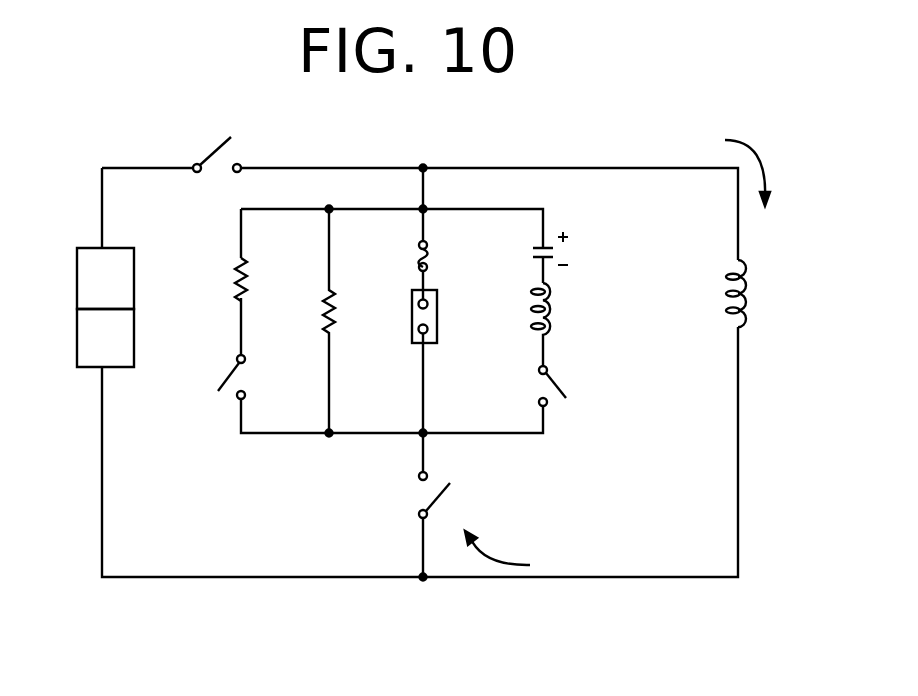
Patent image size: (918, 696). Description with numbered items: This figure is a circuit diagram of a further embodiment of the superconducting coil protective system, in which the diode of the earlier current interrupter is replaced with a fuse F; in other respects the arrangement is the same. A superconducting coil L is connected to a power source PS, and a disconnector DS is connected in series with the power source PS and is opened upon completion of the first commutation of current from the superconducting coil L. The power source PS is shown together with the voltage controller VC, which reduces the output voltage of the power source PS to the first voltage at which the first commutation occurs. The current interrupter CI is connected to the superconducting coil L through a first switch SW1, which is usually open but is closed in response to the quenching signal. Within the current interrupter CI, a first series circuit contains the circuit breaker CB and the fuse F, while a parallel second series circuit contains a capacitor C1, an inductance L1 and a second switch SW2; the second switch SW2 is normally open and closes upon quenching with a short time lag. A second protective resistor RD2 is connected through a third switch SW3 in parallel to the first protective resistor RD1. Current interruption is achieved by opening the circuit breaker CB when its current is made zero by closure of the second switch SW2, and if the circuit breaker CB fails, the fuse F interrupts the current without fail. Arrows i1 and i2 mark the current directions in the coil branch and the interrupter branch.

The disconnector DS is at (217, 140).
The power source PS is at (105, 278).
The voltage controller VC is at (105, 338).
The second protective resistor RD2 is at (270, 279).
The first protective resistor RD1 is at (356, 321).
The third switch SW3 is at (200, 377).
The fuse F is at (438, 256).
The circuit breaker CB is at (447, 316).
The capacitor C1 is at (574, 257).
The inductance L1 is at (560, 324).
The second switch SW2 is at (580, 386).
The first switch SW1 is at (464, 495).
The current interrupter CI is at (506, 366).
The superconducting coil L is at (751, 293).
The current i1 is at (756, 162).
The current i2 is at (501, 545).